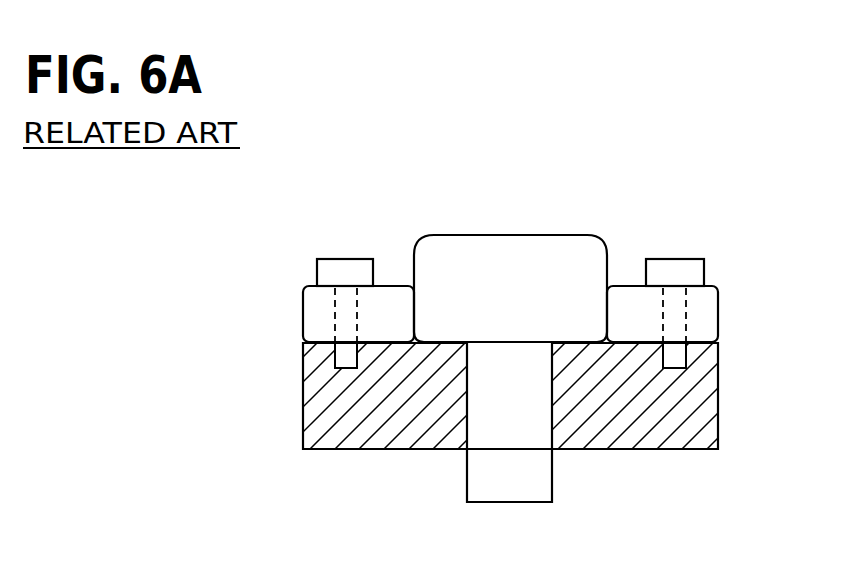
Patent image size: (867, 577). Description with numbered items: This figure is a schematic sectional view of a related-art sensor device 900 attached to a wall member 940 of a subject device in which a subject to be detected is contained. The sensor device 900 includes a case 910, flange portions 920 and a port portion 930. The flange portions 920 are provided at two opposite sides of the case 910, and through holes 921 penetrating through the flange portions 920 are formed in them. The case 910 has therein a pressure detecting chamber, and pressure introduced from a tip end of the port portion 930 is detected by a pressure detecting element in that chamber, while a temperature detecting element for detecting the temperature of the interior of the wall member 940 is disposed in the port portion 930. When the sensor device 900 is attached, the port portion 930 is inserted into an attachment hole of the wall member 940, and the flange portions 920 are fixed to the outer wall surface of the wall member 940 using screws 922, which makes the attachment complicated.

The sensor device 900 is at (577, 232).
The case 910 is at (504, 257).
The flange portions 920 is at (313, 319).
The through holes 921 is at (358, 308).
The screws 922 is at (330, 272).
The port portion 930 is at (540, 476).
The wall member 940 is at (382, 438).